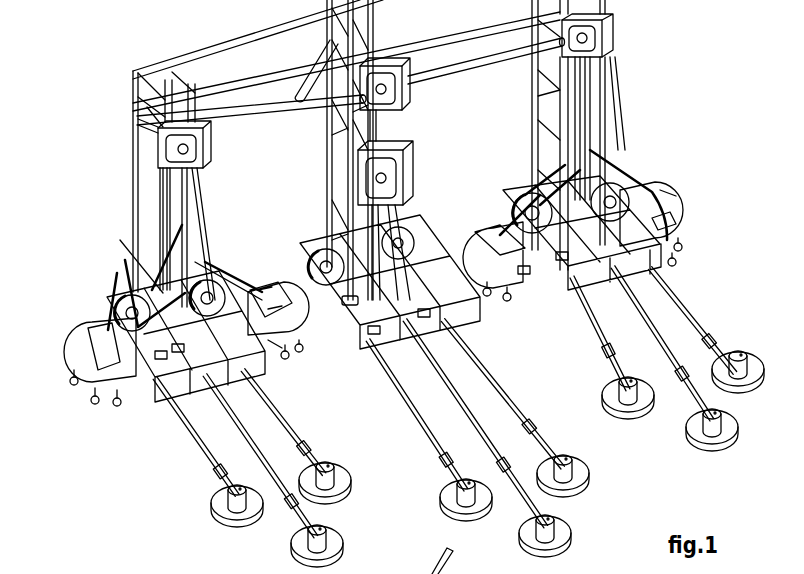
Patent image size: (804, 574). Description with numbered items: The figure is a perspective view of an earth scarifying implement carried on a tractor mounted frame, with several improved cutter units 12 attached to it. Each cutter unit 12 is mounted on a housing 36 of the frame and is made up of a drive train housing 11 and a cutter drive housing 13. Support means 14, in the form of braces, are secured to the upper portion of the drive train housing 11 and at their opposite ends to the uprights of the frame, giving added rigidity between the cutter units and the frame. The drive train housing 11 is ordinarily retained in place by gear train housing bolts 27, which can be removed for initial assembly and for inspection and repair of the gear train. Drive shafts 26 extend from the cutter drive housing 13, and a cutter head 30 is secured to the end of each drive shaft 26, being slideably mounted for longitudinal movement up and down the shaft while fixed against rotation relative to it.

The drive train housing 11 is at (82, 349).
The cutter unit 12 is at (92, 305).
The cutter drive housing 13 is at (88, 368).
The support means 14 is at (140, 285).
The drive shaft 26 is at (70, 382).
The gear train housing bolts 27 is at (60, 352).
The cutter head 30 is at (72, 397).
The housing 36 is at (277, 356).